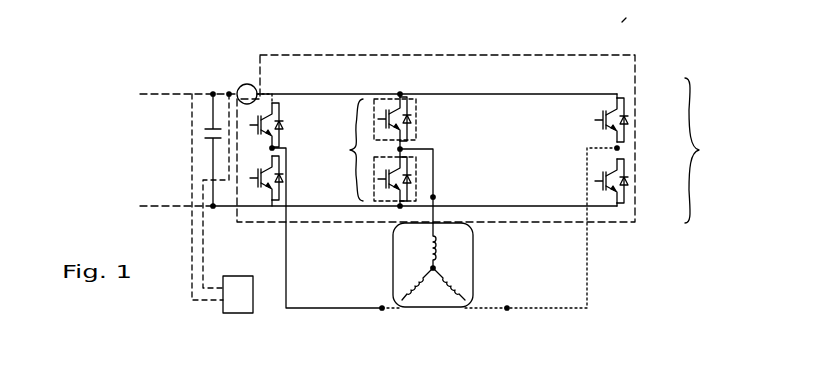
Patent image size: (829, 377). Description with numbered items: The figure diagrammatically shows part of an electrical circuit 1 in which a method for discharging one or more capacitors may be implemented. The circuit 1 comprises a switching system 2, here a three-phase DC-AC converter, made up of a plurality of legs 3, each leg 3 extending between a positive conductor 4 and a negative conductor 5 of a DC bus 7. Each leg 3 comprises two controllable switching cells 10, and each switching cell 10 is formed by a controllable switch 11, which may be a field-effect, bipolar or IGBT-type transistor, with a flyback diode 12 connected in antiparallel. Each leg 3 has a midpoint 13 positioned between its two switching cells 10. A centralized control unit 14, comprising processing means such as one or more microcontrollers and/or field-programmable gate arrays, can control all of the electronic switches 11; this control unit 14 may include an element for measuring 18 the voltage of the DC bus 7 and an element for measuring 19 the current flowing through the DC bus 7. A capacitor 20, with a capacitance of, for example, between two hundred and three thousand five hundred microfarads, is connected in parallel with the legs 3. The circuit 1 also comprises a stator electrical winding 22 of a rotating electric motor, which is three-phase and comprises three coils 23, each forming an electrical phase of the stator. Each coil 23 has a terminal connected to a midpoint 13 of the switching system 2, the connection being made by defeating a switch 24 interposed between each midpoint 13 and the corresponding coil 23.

The electrical circuit 1 is at (622, 22).
The switching system 2 is at (307, 55).
The leg 3 is at (350, 150).
The positive conductor 4 is at (597, 94).
The negative conductor 5 is at (605, 206).
The DC bus 7 is at (699, 150).
The controllable switching cell 10 is at (418, 116).
The controllable switch 11 is at (256, 196).
The flyback diode 12 is at (292, 182).
The midpoint 13 is at (404, 150).
The control unit 14 is at (243, 313).
The element for measuring the voltage 18 is at (229, 92).
The element for measuring the current 19 is at (247, 84).
The capacitor 20 is at (213, 118).
The stator electrical winding 22 is at (473, 282).
The coil 23 is at (416, 282).
The switch 24 is at (437, 194).